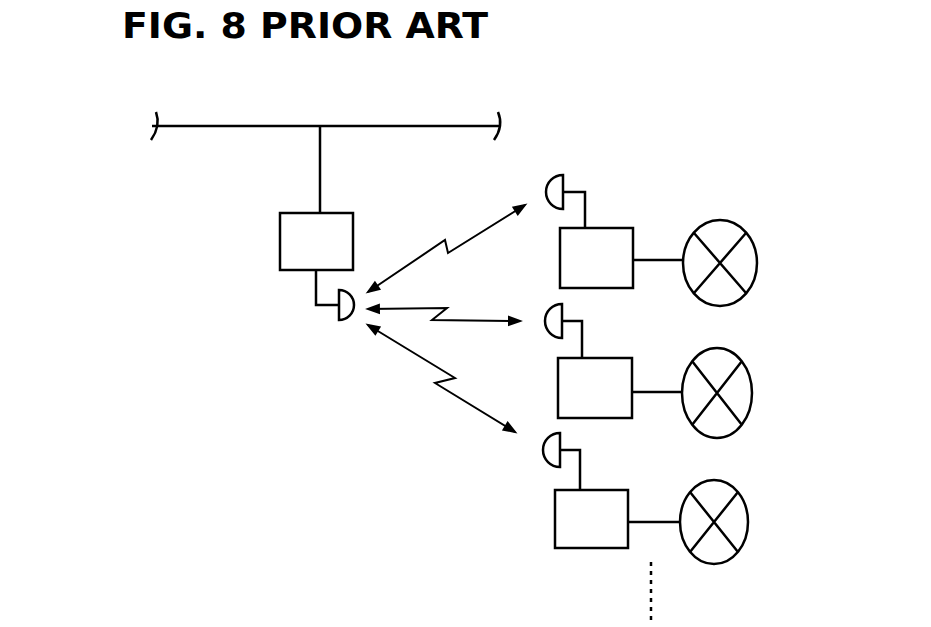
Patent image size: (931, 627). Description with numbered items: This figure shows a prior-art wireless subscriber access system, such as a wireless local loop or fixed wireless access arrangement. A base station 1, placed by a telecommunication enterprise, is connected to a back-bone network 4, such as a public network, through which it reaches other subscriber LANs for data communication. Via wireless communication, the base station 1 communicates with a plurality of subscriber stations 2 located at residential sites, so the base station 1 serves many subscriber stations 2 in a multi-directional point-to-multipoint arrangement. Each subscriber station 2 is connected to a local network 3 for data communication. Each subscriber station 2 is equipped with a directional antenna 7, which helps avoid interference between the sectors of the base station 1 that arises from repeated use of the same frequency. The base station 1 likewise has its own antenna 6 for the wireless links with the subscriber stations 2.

The base station 1 is at (338, 211).
The subscriber station 2 is at (624, 228).
The local network 3 is at (747, 236).
The back-bone network 4 is at (452, 128).
The transmitter/receiver 6 is at (345, 322).
The directional antenna 7 is at (566, 175).